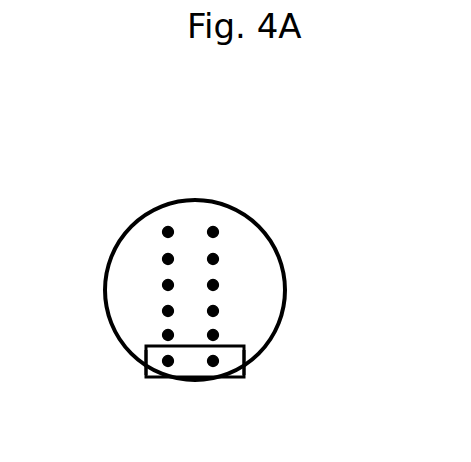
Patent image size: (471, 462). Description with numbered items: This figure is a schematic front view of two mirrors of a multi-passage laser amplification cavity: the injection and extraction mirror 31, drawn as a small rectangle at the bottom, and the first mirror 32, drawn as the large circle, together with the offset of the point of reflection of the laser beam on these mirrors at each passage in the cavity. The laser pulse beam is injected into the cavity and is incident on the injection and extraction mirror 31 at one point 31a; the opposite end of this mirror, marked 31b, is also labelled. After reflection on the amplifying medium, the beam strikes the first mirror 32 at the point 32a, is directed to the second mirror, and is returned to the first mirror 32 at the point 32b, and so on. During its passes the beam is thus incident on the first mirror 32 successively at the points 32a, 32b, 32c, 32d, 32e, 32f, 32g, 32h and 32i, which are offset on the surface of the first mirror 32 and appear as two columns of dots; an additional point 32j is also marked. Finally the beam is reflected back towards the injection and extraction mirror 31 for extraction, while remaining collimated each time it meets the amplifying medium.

The injection and extraction mirror 31 is at (180, 378).
The point 31a is at (146, 363).
The connector base right end 31b is at (244, 366).
The first mirror 32 is at (193, 198).
The point 32a is at (213, 232).
The point 32b is at (168, 335).
The point 32c is at (213, 259).
The point 32d is at (168, 311).
The point 32e is at (213, 285).
The point 32f is at (168, 285).
The point 32g is at (213, 311).
The point 32h is at (168, 259).
The point 32i is at (213, 335).
The pin 32j is at (168, 232).